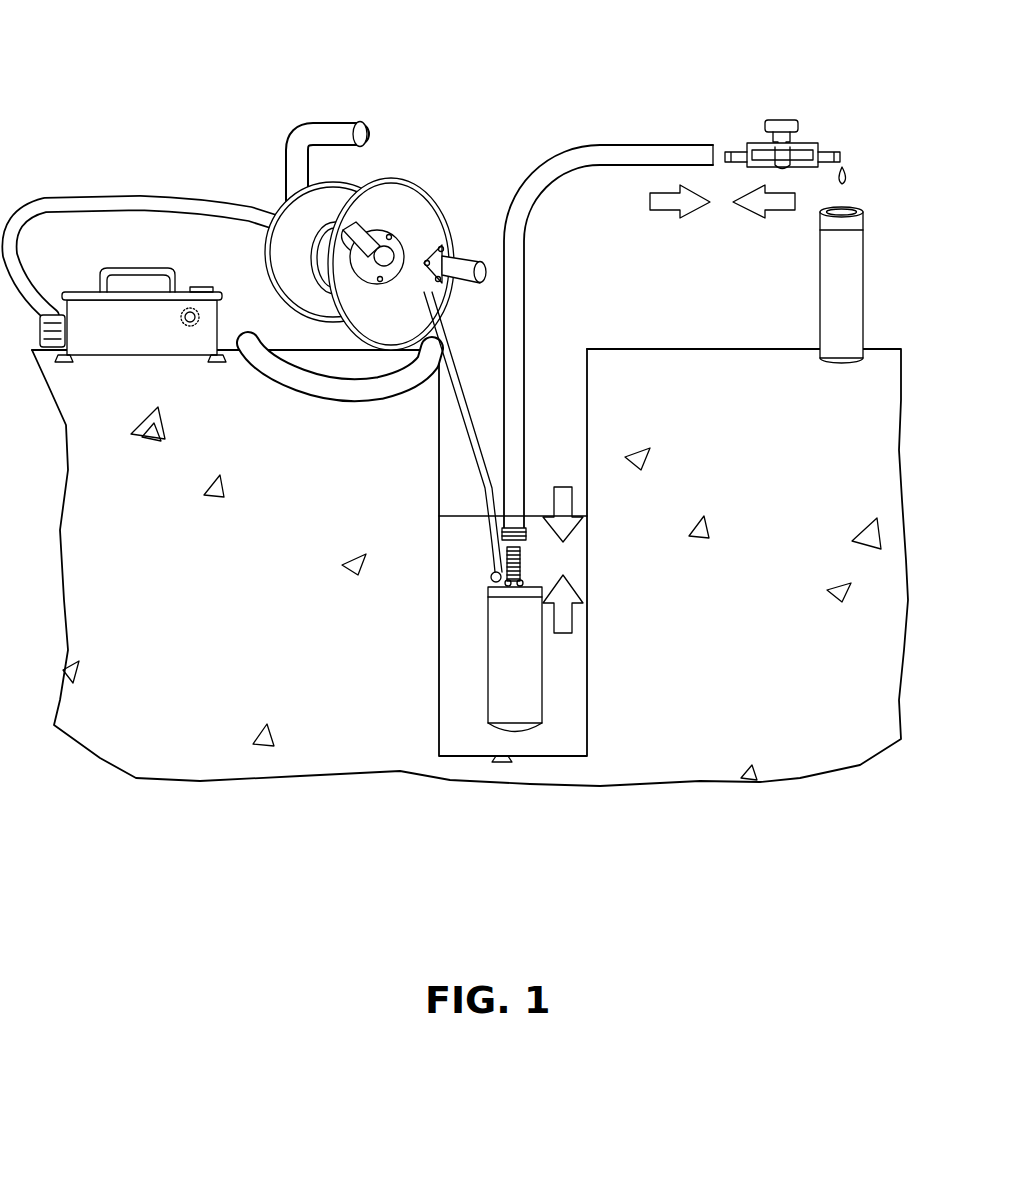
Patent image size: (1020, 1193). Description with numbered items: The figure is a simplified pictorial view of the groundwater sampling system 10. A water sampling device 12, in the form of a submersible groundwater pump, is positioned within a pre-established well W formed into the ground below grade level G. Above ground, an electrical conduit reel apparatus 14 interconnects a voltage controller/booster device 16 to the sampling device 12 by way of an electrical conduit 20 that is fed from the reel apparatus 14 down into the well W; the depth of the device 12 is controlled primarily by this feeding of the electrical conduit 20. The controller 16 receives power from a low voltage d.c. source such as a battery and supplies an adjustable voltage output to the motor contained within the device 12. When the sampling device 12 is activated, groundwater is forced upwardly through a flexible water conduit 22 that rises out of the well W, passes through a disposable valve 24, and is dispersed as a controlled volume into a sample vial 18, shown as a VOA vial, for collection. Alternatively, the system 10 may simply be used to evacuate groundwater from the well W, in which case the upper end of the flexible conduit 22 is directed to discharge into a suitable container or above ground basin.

The system 10 is at (458, 399).
The water sampling device 12 is at (482, 677).
The electrical conduit reel apparatus 14 is at (388, 175).
The voltage controller/booster device 16 is at (140, 265).
The sample vial 18 is at (821, 336).
The electrical conduit 20 is at (477, 410).
The water conduit 22 is at (524, 240).
The disposable valve 24 is at (780, 121).
The well W is at (587, 393).
The grade level G is at (667, 356).